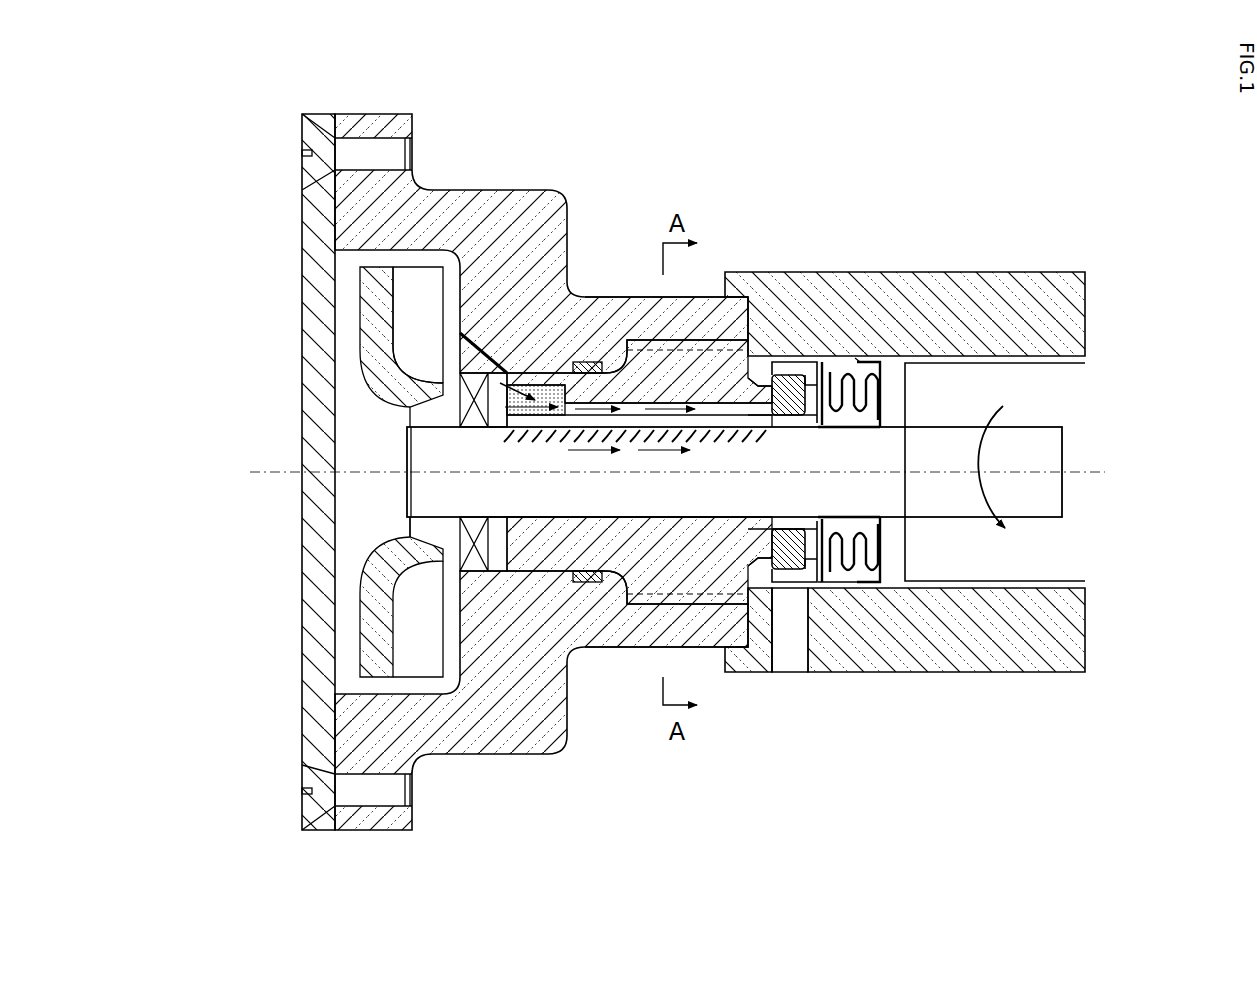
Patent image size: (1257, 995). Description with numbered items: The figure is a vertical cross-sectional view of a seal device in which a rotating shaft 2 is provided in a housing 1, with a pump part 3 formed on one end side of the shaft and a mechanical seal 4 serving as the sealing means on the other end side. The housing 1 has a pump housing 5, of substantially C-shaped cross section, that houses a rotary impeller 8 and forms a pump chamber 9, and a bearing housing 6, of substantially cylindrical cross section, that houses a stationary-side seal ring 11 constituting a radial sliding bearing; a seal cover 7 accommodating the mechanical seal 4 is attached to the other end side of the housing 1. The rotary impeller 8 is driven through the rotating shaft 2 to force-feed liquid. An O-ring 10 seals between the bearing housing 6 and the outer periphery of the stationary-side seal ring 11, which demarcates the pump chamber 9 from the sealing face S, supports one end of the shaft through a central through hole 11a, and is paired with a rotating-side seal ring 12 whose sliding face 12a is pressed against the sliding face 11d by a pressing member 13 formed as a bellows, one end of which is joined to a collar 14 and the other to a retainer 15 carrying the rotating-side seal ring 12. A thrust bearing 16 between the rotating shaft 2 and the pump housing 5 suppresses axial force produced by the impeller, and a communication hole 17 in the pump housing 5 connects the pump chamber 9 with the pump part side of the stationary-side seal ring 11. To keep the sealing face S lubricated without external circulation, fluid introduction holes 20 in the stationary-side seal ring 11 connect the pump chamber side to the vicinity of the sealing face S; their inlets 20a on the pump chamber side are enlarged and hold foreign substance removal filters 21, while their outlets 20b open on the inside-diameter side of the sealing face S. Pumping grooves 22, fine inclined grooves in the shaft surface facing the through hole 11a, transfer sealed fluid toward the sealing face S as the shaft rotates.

The housing 1 is at (527, 187).
The rotating shaft 2 is at (427, 453).
The pump part 3 is at (355, 327).
The mechanical seal 4 is at (795, 362).
The pump housing 5 is at (489, 340).
The bearing housing 6 is at (626, 298).
The seal cover 7 is at (975, 287).
The rotary impeller 8 is at (424, 330).
The pump chamber 9 is at (457, 292).
The O-ring 10 is at (612, 345).
The stationary-side seal ring 11 is at (772, 360).
The through hole 11a is at (686, 505).
The sliding face 11d is at (797, 523).
The rotating-side seal ring 12 is at (800, 588).
The sliding face 12a is at (768, 590).
The pressing member 13 is at (883, 588).
The collar 14 is at (880, 540).
The retainer 15 is at (853, 588).
The thrust bearing 16 is at (395, 585).
The communication hole 17 is at (482, 335).
The fluid introduction holes 20 is at (668, 403).
The inlets 20a is at (516, 405).
The outlets 20b is at (768, 392).
The foreign substance removal filters 21 is at (588, 360).
The pumping grooves 22 is at (548, 445).
The sealing face S is at (855, 360).